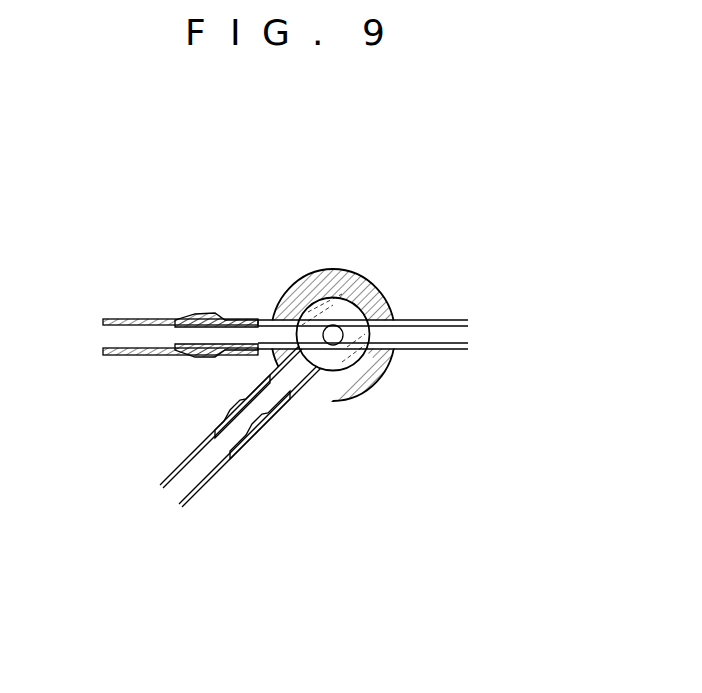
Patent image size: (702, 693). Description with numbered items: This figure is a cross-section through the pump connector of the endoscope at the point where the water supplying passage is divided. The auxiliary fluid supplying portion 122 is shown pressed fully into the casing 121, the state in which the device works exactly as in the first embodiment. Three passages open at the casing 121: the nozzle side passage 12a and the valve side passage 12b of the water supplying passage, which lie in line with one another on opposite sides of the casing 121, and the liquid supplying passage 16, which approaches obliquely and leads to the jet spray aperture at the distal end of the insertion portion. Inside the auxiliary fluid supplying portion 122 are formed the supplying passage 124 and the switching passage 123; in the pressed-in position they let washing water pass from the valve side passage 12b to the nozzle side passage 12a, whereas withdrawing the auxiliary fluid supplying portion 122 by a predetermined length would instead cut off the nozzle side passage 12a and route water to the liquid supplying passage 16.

The nozzle side passage 12a is at (133, 320).
The valve side passage 12b is at (440, 320).
The liquid supplying passage 16 is at (210, 485).
The casing 121 is at (330, 280).
The auxiliary fluid supplying portion 122 is at (372, 367).
The switching passage 123 is at (308, 333).
The supplying passage 124 is at (333, 345).